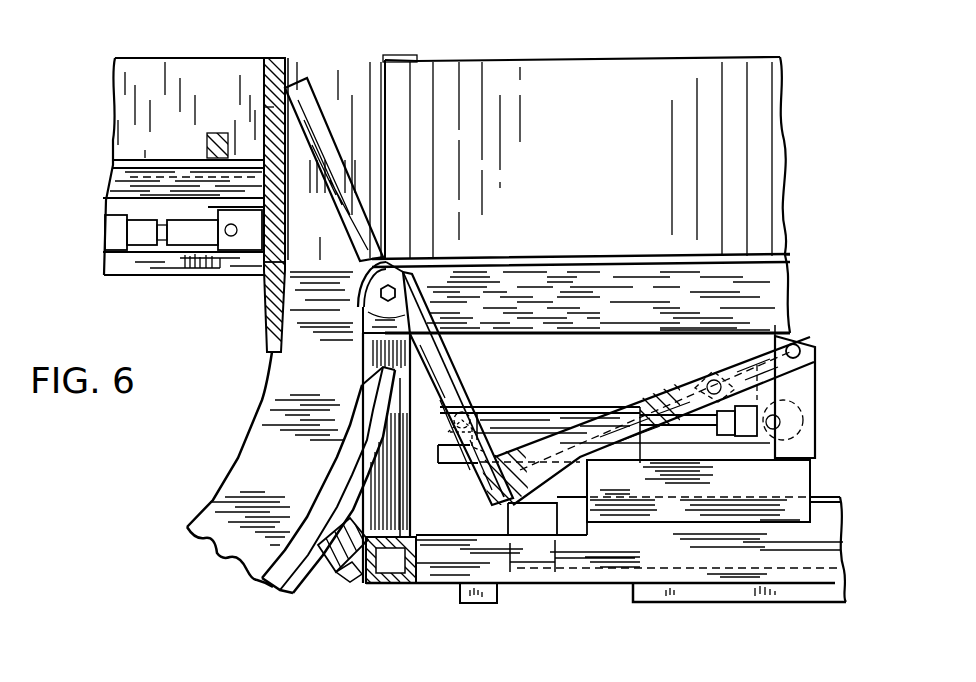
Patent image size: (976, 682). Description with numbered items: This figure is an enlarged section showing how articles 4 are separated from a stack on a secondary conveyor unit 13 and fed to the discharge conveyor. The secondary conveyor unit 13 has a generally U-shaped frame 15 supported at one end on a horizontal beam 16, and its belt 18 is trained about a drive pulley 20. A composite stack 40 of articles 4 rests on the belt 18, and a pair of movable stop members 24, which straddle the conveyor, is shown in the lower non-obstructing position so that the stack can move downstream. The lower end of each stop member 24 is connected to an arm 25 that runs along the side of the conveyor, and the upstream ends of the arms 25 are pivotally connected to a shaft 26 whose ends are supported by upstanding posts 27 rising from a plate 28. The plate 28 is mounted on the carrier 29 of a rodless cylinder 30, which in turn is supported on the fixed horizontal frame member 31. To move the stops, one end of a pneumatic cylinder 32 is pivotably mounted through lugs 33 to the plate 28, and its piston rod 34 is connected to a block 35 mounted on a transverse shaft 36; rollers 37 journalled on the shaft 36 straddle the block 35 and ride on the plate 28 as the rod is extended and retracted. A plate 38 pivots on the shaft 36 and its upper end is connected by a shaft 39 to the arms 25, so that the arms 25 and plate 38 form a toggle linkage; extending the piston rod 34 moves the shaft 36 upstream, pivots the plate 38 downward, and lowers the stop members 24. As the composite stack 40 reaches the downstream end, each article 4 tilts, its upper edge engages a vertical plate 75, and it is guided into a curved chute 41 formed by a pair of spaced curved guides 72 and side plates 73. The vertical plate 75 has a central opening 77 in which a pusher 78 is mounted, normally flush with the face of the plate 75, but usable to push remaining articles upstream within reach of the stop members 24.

The article 4 is at (318, 110).
The secondary conveyor unit 13 is at (757, 250).
The U-shaped frame 15 is at (778, 292).
The horizontal beam 16 is at (373, 352).
The belt 18 is at (600, 257).
The drive pulley 20 is at (358, 297).
The stop member 24 is at (450, 380).
The arm 25 is at (668, 399).
The shaft 26 is at (800, 347).
The upstanding post 27 is at (806, 377).
The plate 28 is at (450, 463).
The carrier 29 is at (803, 482).
The rodless cylinder 30 is at (571, 515).
The fixed horizontal frame member 31 is at (765, 602).
The pneumatic cylinder 32 is at (568, 406).
The lug 33 is at (455, 443).
The piston rod 34 is at (668, 442).
The block 35 is at (742, 437).
The transverse shaft 36 is at (803, 412).
The roller 37 is at (770, 440).
The plate 38 is at (757, 402).
The shaft 39 is at (715, 380).
The composite stack 40 is at (638, 57).
The curved chute 41 is at (314, 597).
The curved guide 72 is at (280, 591).
The side plate 73 is at (240, 458).
The vertical plate 75 is at (258, 70).
The central opening 77 is at (272, 108).
The pusher 78 is at (287, 214).